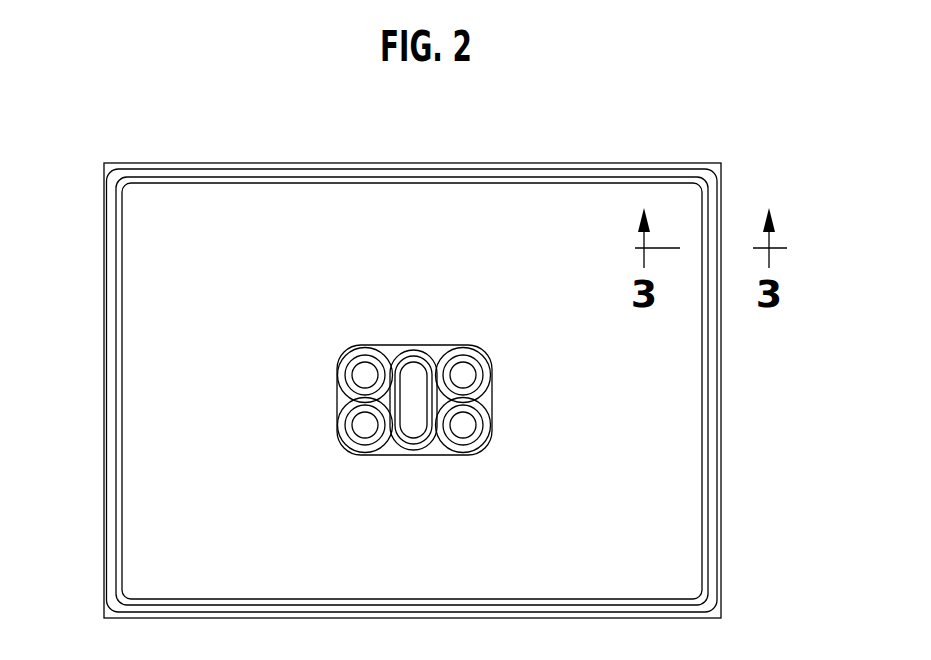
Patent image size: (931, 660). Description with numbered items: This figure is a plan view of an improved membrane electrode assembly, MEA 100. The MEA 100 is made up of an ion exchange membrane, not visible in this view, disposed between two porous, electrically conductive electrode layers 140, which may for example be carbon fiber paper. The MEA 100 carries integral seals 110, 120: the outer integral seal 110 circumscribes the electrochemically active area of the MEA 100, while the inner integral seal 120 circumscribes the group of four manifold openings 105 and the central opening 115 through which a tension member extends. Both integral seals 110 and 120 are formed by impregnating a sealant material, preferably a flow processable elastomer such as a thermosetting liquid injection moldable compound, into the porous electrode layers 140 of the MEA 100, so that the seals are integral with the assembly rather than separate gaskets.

The MEA 100 is at (772, 172).
The manifold openings 105 is at (466, 377).
The integral seal 110 is at (715, 558).
The opening 115 is at (418, 399).
The integral seal 120 is at (463, 447).
The electrode layers 140 is at (143, 550).